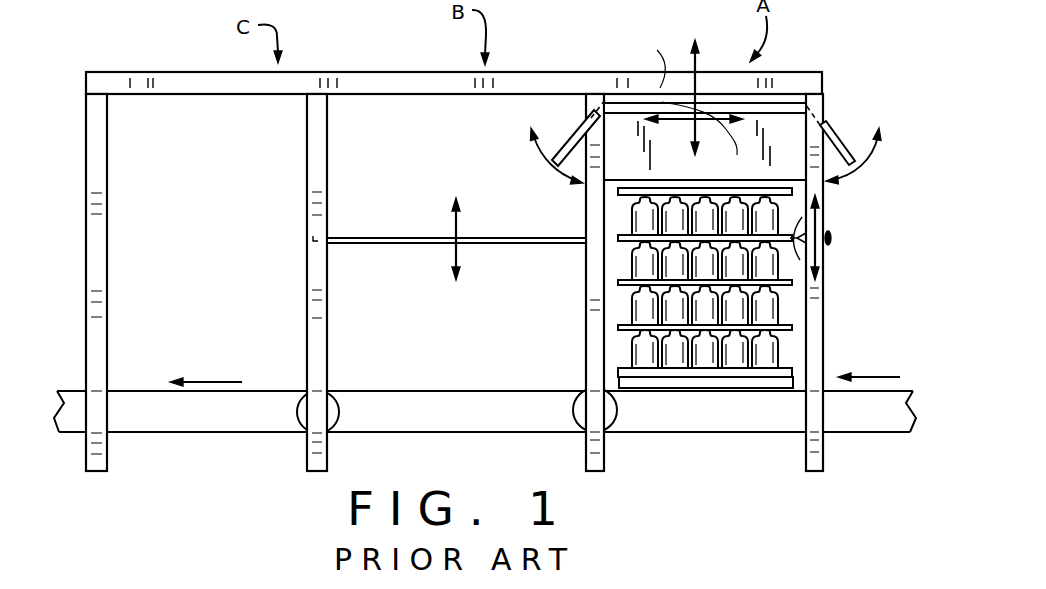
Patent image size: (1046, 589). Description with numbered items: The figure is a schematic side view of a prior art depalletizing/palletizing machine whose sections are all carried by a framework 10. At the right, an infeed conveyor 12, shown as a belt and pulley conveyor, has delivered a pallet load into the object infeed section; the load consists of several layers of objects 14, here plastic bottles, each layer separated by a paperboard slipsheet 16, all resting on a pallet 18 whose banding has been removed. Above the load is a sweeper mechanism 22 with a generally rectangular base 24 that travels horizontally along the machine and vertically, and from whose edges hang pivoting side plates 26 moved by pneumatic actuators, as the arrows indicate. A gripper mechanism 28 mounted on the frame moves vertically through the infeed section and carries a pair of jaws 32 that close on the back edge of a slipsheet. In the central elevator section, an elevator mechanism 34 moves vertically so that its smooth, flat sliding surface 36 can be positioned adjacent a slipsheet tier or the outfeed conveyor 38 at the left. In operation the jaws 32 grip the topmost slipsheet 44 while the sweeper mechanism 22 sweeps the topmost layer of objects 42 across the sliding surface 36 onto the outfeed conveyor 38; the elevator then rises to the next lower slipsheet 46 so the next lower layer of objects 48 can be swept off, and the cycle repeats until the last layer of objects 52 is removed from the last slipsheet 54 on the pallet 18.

The framework 10 is at (386, 78).
The infeed conveyor 12 is at (908, 392).
The objects 14 is at (793, 380).
The slipsheet 16 is at (782, 355).
The pallet 18 is at (790, 377).
The sweeper mechanism 22 is at (788, 147).
The base 24 is at (633, 110).
The side plates 26 is at (572, 136).
The gripper mechanism 28 is at (831, 238).
The jaws 32 is at (823, 208).
The elevator mechanism 34 is at (365, 238).
The sliding surface 36 is at (407, 236).
The outfeed conveyor 38 is at (135, 391).
The topmost layer of objects 42 is at (614, 221).
The topmost slipsheet 44 is at (620, 240).
The next lower slipsheet 46 is at (620, 285).
The next lower layer of objects 48 is at (613, 268).
The last layer of objects 52 is at (612, 356).
The last slipsheet 54 is at (618, 374).